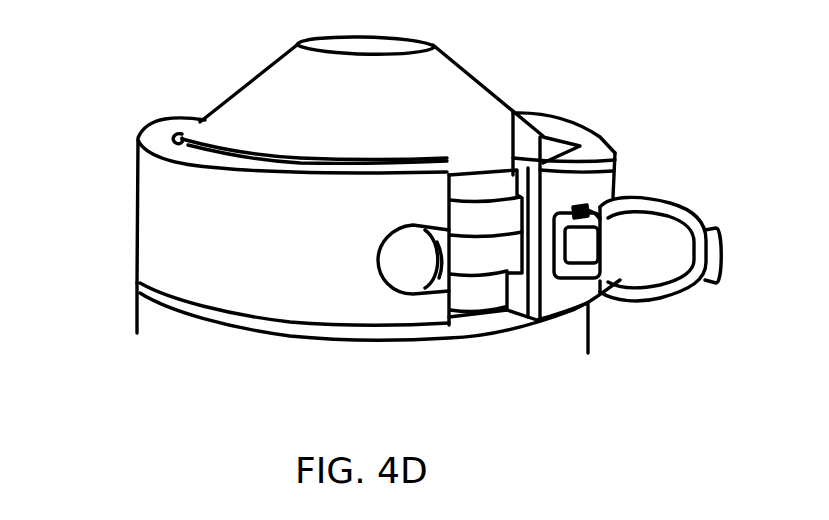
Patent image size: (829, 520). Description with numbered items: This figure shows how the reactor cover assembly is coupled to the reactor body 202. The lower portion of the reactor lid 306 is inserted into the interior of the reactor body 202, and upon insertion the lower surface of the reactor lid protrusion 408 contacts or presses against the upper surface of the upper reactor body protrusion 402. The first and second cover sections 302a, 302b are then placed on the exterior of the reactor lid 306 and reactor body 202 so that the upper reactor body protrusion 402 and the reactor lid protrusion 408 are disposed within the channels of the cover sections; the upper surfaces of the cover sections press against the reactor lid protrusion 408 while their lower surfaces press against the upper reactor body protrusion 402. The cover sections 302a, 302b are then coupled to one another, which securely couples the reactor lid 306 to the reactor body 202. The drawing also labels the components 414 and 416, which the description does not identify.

The reactor body 202 is at (147, 333).
The first cover section 302a is at (130, 150).
The second cover section 302b is at (598, 127).
The reactor lid 306 is at (386, 94).
The upper reactor body protrusion 402 is at (473, 262).
The reactor lid protrusion 408 is at (485, 213).
The pin 414 is at (410, 303).
The latch bail 416 is at (657, 200).